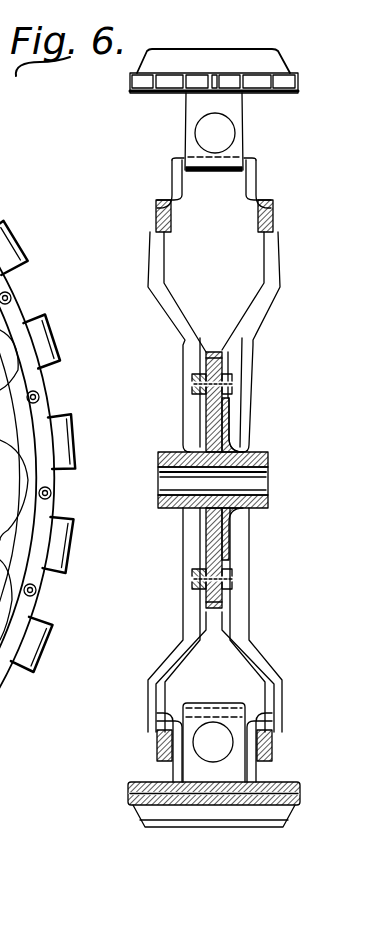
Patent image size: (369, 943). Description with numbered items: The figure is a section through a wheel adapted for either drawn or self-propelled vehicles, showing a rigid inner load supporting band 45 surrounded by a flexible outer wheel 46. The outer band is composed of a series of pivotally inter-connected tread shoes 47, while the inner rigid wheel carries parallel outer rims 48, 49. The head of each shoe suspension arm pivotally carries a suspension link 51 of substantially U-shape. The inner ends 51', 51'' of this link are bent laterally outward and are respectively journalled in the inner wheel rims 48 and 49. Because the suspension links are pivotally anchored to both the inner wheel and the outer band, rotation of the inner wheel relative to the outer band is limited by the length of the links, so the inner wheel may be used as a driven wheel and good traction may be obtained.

The rigid inner load supporting band 45 is at (230, 431).
The flexible outer wheel 46 is at (290, 110).
The tread shoe 47 is at (185, 97).
The outer rim 48 is at (155, 216).
The outer rim 49 is at (274, 222).
The suspension link 51 is at (248, 429).
The inner end of suspension link 51' is at (183, 512).
The inner end of suspension link 51'' is at (242, 512).